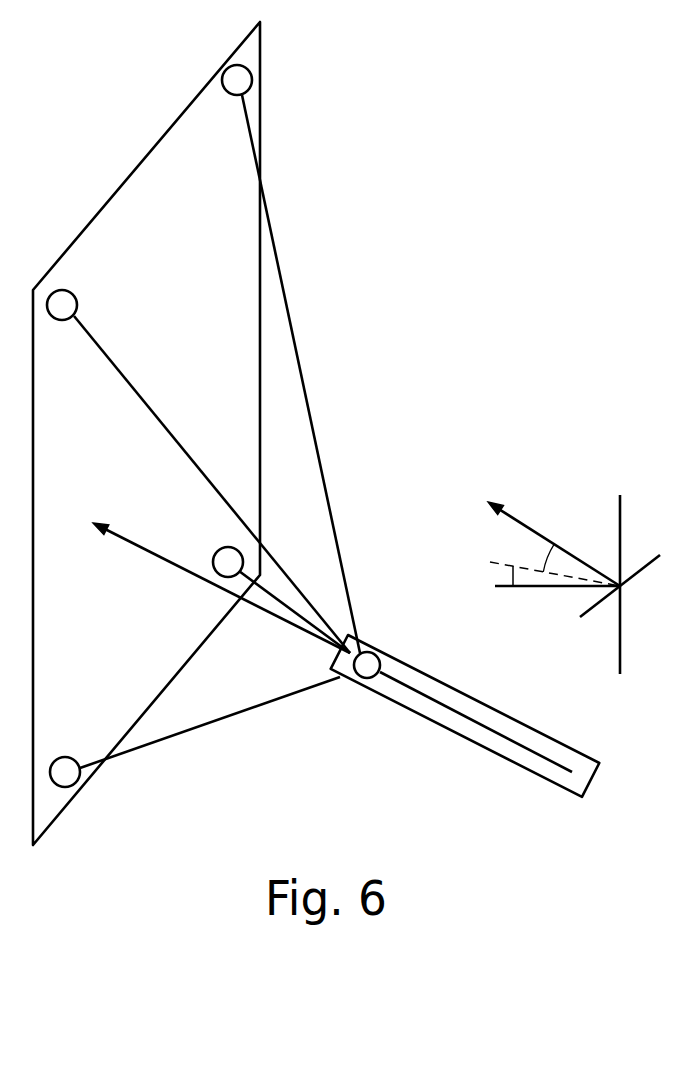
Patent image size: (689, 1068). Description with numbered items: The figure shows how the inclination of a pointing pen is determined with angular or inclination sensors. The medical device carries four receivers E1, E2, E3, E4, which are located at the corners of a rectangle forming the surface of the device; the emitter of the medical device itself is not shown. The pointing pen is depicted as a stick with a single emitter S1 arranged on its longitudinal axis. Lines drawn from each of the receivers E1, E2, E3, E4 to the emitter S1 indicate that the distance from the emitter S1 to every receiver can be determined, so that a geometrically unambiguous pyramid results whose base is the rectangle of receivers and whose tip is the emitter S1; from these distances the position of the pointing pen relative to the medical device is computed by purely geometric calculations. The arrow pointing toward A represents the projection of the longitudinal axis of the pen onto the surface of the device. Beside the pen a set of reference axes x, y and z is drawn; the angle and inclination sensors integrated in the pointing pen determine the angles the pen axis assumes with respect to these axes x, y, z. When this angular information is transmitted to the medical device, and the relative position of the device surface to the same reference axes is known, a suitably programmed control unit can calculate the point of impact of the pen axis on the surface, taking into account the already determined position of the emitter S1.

The receiver E1 is at (198, 471).
The receiver E2 is at (283, 359).
The receiver E3 is at (195, 732).
The receiver E4 is at (272, 585).
The emitter S1 is at (462, 716).
The projection of the longitudinal axis A is at (219, 588).
The reference axis x is at (557, 601).
The reference axis y is at (630, 583).
The reference axis z is at (616, 599).